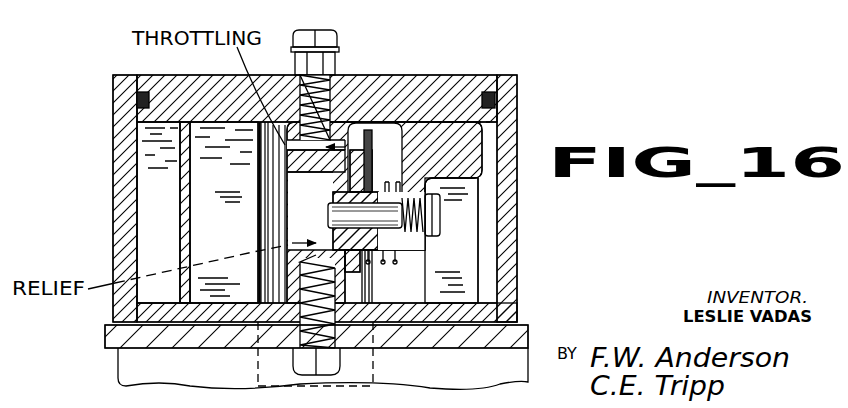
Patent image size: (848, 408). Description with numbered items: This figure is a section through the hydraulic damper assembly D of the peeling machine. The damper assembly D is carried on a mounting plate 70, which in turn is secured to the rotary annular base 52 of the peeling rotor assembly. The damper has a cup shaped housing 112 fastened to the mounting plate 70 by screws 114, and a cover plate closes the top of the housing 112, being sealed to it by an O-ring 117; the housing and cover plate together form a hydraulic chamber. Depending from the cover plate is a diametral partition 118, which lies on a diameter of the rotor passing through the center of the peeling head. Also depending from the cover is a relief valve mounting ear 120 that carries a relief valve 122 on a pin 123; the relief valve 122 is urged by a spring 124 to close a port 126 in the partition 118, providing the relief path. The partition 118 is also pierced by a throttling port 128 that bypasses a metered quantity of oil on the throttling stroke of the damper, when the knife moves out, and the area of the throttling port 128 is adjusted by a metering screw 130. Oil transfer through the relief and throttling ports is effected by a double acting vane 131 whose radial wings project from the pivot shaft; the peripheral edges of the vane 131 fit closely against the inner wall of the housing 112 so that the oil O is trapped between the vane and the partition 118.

The annular base 52 is at (125, 371).
The mounting plate 70 is at (118, 338).
The cup shaped housing 112 is at (508, 94).
The screws 114 is at (295, 352).
The O-ring 117 is at (138, 101).
The diametral partition 118 is at (292, 164).
The relief valve mounting ear 120 is at (450, 152).
The relief valve 122 is at (360, 262).
The pin 123 is at (330, 222).
The spring 124 is at (392, 248).
The port 126 is at (318, 186).
The throttling port 128 is at (330, 135).
The metering screw 130 is at (338, 50).
The vane 131 is at (197, 218).
The oil O is at (140, 141).
The damper assembly D is at (482, 79).